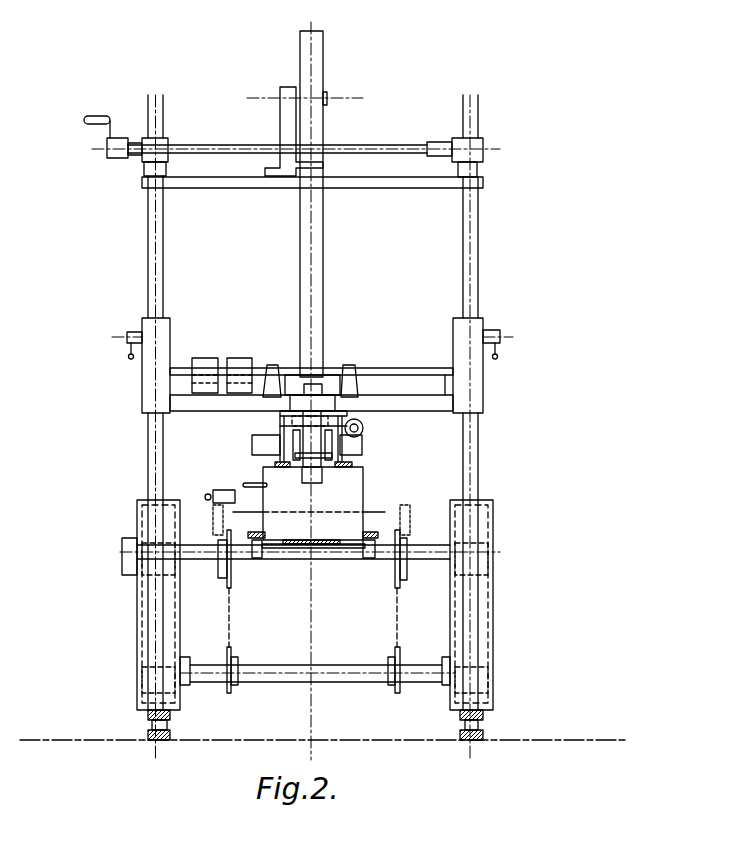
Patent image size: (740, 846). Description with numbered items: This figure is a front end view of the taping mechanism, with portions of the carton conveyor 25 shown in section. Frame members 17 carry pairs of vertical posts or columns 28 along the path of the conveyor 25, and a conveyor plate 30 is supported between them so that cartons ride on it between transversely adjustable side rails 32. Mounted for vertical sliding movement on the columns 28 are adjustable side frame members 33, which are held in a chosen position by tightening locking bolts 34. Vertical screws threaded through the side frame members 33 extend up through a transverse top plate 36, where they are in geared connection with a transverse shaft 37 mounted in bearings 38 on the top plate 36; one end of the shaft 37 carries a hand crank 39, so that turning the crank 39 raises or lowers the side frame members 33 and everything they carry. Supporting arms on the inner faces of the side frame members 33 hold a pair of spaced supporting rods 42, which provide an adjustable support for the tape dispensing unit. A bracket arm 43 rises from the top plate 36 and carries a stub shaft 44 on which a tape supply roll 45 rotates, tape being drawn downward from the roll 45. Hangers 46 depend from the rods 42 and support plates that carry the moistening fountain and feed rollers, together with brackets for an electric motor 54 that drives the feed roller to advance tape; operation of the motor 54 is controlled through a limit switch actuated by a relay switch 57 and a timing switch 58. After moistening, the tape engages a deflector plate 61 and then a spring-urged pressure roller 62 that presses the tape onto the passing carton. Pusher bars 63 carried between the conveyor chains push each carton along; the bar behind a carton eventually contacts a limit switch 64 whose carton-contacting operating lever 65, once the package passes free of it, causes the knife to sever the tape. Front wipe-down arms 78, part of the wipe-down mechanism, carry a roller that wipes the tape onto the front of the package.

The frame members 17 is at (137, 628).
The conveyor 25 is at (252, 505).
The vertical posts or columns 28 is at (150, 458).
The conveyor plate 30 is at (322, 548).
The side rails 32 is at (246, 546).
The side frame members 33 is at (147, 385).
The locking bolts 34 is at (127, 335).
The top plate 36 is at (356, 186).
The transverse shaft 37 is at (259, 146).
The bearings 38 is at (145, 140).
The hand crank 39 is at (107, 136).
The supporting rods 42 is at (395, 373).
The bracket arm 43 is at (283, 118).
The stub shaft 44 is at (328, 98).
The tape supply roll 45 is at (322, 46).
The hangers 46 is at (272, 367).
The electric motor 54 is at (364, 425).
The relay switch 57 is at (205, 360).
The timing switch 58 is at (240, 360).
The deflector plate 61 is at (280, 430).
The pressure roller 62 is at (312, 483).
The pusher bars 63 is at (375, 500).
The limit switch 64 is at (213, 488).
The operating lever 65 is at (258, 484).
The front wipe-down arms 78 is at (282, 466).